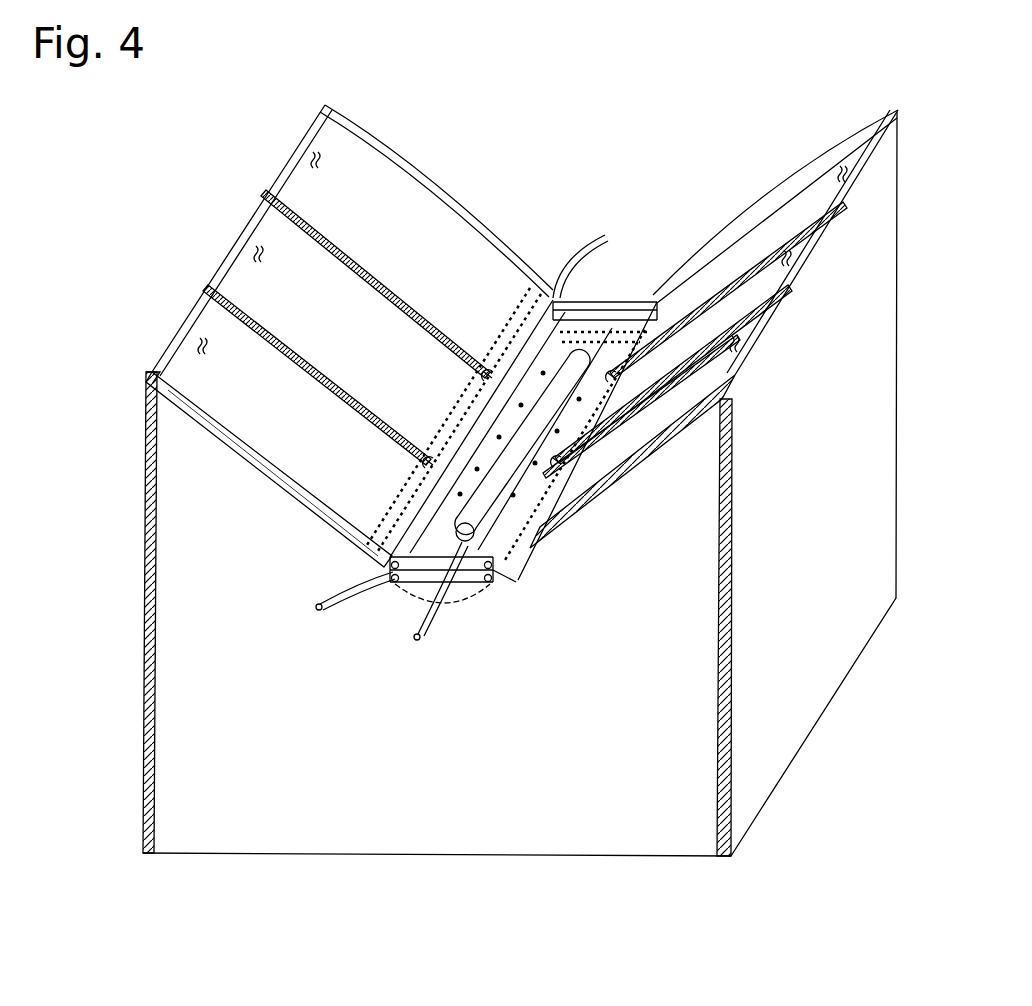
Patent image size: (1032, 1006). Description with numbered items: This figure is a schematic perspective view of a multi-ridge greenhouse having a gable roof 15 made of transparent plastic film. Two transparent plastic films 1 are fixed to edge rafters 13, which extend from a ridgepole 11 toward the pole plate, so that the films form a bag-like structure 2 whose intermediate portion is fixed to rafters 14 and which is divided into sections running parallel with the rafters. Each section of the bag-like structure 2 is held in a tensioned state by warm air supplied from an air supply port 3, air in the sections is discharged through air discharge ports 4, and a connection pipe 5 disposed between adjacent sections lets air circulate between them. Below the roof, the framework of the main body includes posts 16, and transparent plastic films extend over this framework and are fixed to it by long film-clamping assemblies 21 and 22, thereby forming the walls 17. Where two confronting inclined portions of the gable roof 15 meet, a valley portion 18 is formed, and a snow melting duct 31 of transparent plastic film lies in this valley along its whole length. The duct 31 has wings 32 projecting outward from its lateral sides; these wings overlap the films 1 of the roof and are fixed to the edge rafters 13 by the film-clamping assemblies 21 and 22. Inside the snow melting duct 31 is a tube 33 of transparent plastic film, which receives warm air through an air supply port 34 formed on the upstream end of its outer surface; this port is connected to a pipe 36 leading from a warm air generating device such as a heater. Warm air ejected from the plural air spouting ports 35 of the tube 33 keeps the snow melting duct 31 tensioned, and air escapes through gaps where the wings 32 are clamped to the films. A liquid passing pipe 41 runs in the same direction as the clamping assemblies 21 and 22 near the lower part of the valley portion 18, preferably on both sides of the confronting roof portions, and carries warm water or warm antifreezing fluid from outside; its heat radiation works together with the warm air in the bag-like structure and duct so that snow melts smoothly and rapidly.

The transparent plastic film 1 is at (402, 150).
The bag-like structure 2 is at (290, 183).
The air supply port 3 is at (636, 412).
The air discharge port 4 is at (300, 150).
The connection pipe 5 is at (486, 370).
The ridgepole 11 is at (150, 374).
The edge rafter 13 is at (200, 428).
The rafter 14 is at (262, 194).
The roof 15 is at (163, 213).
The post 16 is at (146, 604).
The wall 17 is at (341, 787).
The valley portion 18 is at (640, 318).
The long film-clamping assembly (bottom receiver) 21 is at (400, 592).
The long film-clamping assembly (retainer) 22 is at (386, 585).
The snow melting duct 31 is at (606, 300).
The wing 32 is at (518, 584).
The tube 33 is at (475, 420).
The air supply port 34 is at (470, 560).
The air spouting port 35 is at (425, 460).
The pipe 36 is at (606, 400).
The liquid passing pipe 41 is at (445, 432).